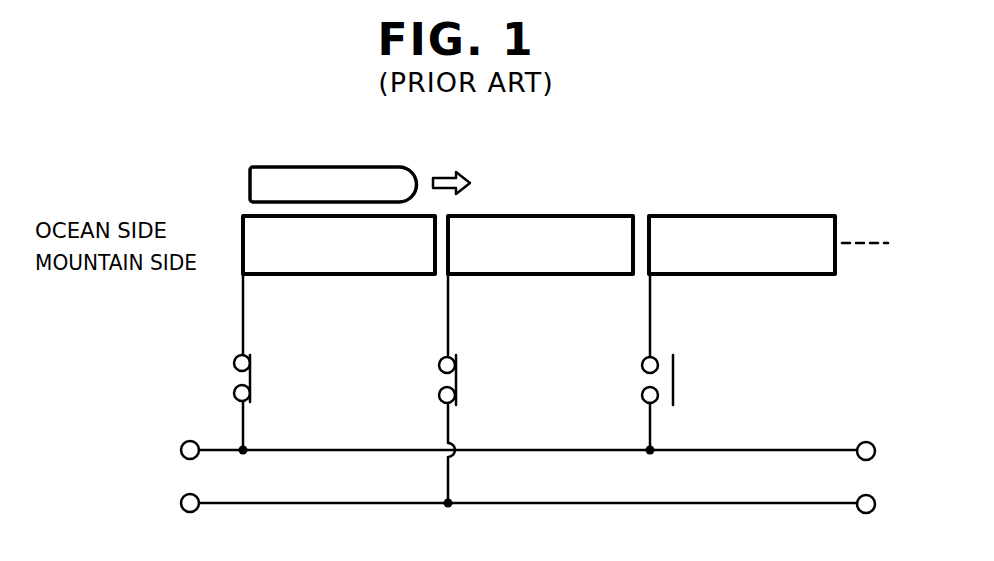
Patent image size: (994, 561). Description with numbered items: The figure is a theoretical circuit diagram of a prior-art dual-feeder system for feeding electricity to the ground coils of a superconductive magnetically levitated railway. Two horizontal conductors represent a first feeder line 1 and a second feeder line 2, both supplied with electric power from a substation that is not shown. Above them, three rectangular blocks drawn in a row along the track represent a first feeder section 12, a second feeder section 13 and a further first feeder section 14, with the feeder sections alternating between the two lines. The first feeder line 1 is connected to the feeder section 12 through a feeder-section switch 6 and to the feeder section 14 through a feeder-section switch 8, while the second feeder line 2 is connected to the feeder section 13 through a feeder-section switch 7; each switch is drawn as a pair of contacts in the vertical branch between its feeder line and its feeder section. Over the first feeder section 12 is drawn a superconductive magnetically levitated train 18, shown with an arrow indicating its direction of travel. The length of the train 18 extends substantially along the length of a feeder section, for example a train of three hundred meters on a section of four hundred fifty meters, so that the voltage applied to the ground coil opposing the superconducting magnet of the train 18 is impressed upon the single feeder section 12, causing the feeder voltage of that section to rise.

The first feeder line 1 is at (512, 450).
The second feeder line 2 is at (511, 503).
The feeder-section switch 6 is at (258, 367).
The feeder-section switch 7 is at (464, 370).
The feeder-section switch 8 is at (677, 372).
The first feeder section 12 is at (361, 275).
The second feeder section 13 is at (559, 276).
The first feeder section 14 is at (747, 276).
The superconductive magnetically levitated train 18 is at (352, 167).